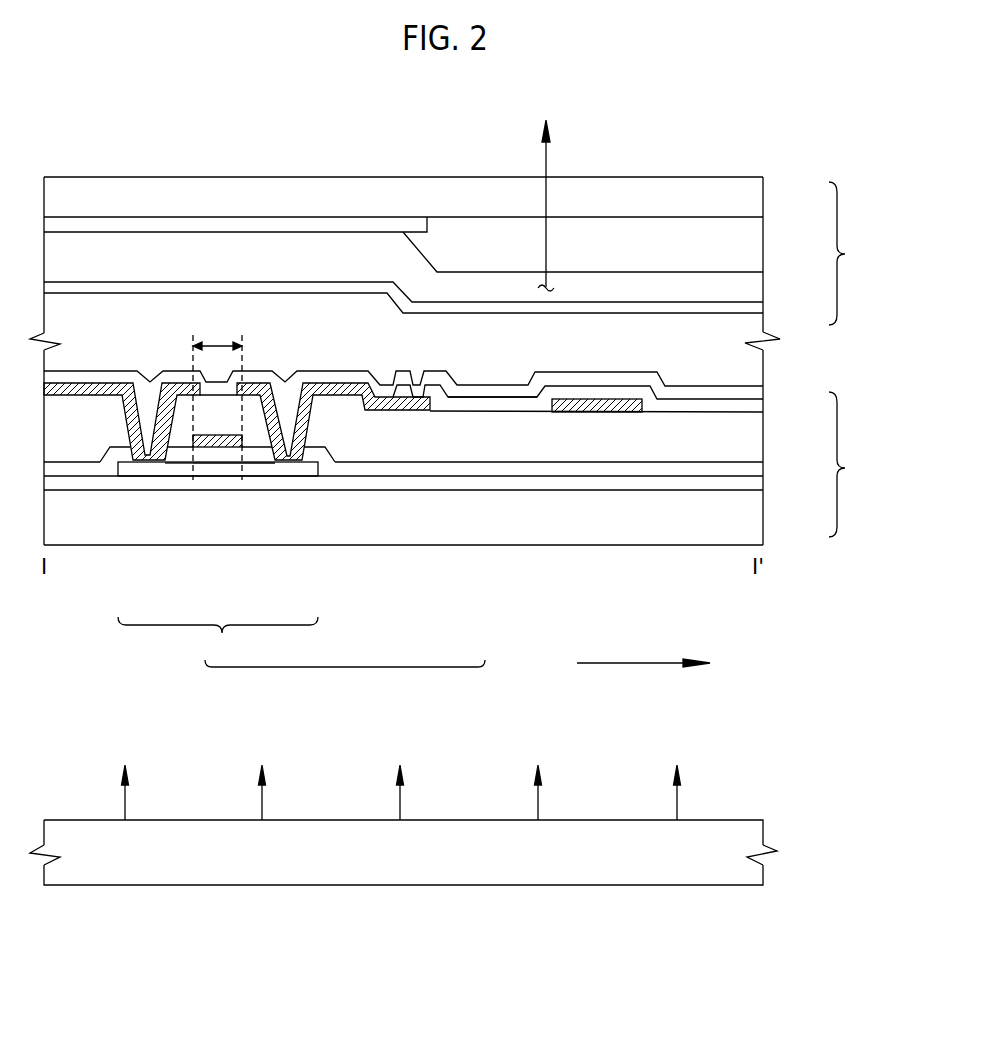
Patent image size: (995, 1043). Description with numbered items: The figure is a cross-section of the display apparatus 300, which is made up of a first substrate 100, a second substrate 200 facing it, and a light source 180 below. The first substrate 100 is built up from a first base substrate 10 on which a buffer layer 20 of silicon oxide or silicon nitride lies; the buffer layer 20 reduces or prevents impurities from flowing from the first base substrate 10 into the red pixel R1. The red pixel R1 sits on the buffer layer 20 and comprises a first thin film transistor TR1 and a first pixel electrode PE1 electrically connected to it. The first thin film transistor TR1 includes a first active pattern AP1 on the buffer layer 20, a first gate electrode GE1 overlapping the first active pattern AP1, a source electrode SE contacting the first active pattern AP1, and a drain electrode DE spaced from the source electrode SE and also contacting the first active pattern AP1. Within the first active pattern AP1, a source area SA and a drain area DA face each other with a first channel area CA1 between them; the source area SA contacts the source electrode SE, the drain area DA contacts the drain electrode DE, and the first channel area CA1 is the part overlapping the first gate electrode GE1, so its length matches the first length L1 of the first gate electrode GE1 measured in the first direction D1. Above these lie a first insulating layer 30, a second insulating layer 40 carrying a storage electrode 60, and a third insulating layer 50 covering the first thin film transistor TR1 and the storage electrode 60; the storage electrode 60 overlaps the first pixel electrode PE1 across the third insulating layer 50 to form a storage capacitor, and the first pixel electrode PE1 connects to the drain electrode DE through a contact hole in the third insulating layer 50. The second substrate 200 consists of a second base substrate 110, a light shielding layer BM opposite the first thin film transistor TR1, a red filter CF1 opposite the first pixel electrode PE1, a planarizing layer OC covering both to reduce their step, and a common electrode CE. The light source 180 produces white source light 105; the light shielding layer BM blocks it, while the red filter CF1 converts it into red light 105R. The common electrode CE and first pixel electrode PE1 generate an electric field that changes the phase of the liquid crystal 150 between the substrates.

The display apparatus 300 is at (697, 134).
The second substrate 200 is at (852, 253).
The second base substrate 110 is at (763, 200).
The light shielding layer BM is at (303, 230).
The red filter CF1 is at (763, 241).
The planarizing layer OC is at (763, 289).
The common electrode CE is at (763, 318).
The red light 105R is at (549, 148).
The liquid crystal 150 is at (763, 366).
The first substrate 100 is at (852, 464).
The first base substrate 10 is at (763, 524).
The buffer layer 20 is at (763, 494).
The first insulating layer 30 is at (763, 466).
The second insulating layer 40 is at (763, 438).
The third insulating layer 50 is at (763, 408).
The storage electrode 60 is at (600, 413).
The source electrode SE is at (150, 462).
The drain electrode DE is at (300, 462).
The first gate electrode GE1 is at (193, 446).
The first active pattern AP1 is at (178, 580).
The source area SA is at (183, 462).
The first channel area CA1 is at (225, 462).
The drain area DA is at (267, 462).
The first length L1 is at (217, 397).
The first thin film transistor TR1 is at (218, 638).
The first pixel electrode PE1 is at (475, 399).
The red pixel R1 is at (345, 680).
The first direction D1 is at (655, 664).
The light source 180 is at (763, 838).
The source light 105 is at (290, 794).